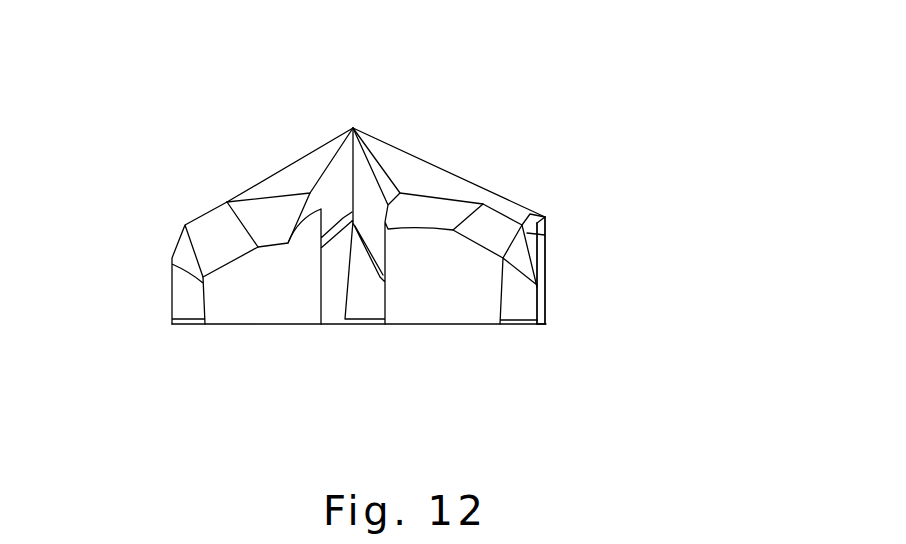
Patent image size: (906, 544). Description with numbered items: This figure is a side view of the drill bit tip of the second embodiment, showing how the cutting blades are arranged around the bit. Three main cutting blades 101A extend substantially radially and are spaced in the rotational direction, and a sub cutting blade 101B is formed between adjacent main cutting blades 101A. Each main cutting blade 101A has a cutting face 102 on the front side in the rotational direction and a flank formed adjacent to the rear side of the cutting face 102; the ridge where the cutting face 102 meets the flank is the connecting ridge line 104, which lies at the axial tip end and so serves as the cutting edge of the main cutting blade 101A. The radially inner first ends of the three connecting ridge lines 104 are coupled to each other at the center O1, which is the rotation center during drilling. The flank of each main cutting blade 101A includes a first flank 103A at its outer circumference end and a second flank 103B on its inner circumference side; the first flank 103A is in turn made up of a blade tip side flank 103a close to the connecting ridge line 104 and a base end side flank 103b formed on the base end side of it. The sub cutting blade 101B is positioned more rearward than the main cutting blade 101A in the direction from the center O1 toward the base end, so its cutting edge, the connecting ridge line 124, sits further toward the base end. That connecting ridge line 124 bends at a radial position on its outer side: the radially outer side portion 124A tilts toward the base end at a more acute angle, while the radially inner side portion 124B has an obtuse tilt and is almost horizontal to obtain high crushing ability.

The center O1 is at (352, 128).
The connecting ridge line 104 is at (322, 148).
The connecting ridge line 124 is at (110, 103).
The radially outer side portion 124A is at (203, 207).
The radially inner side portion 124B is at (268, 184).
The second flank 103B is at (498, 208).
The first flank 103A is at (687, 212).
The blade tip side flank 103a is at (547, 223).
The base end side flank 103b is at (527, 233).
The main cutting blade 101A is at (333, 308).
The sub cutting blade 101B is at (513, 305).
The cutting face 102 is at (378, 242).